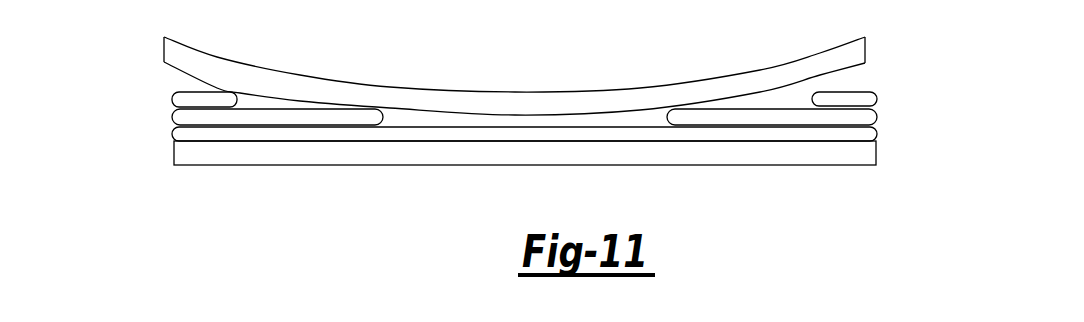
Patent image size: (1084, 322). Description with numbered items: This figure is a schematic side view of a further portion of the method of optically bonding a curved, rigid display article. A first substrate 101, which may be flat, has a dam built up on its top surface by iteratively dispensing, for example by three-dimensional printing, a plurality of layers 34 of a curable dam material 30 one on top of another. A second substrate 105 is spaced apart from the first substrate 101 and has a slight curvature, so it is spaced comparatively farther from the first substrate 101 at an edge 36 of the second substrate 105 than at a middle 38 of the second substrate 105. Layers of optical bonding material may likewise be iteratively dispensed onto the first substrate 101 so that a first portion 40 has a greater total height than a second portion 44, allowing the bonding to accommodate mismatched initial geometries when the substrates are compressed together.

The dam material 30 is at (460, 116).
The layers 34 is at (172, 97).
The edge 36 is at (866, 50).
The middle 38 is at (500, 66).
The first portion 40 is at (525, 204).
The second portion 44 is at (525, 204).
The first substrate 101 is at (765, 152).
The second substrate 105 is at (561, 70).